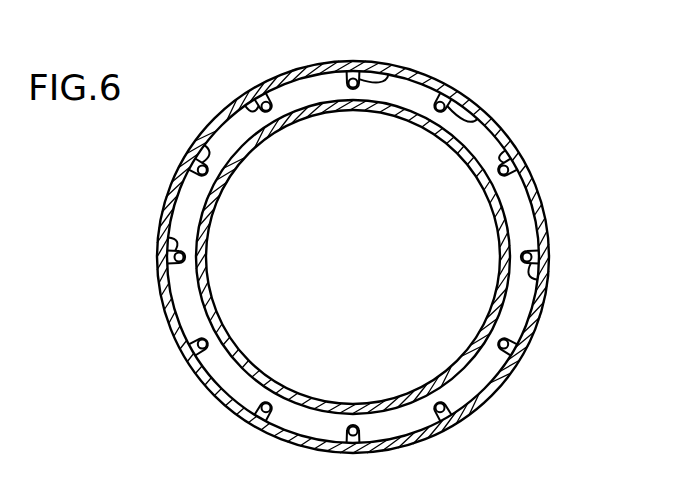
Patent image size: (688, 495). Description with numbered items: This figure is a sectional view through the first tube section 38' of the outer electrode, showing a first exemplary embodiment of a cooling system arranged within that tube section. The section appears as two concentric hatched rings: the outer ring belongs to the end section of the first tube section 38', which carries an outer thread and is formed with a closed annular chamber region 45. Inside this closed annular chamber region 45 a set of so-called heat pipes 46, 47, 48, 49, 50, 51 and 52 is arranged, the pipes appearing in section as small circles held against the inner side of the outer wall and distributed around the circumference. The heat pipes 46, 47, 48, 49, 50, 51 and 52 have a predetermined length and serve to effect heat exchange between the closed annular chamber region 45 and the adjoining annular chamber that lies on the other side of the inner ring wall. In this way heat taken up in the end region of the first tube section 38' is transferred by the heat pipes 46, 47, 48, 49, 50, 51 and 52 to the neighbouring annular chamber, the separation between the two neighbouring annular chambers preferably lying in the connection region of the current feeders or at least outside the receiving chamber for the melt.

The first tube section 38' is at (306, 257).
The closed annular chamber region 45 is at (523, 209).
The heat pipe 46 is at (540, 280).
The heat pipe 47 is at (510, 147).
The heat pipe 48 is at (480, 114).
The heat pipe 49 is at (396, 64).
The heat pipe 50 is at (244, 104).
The heat pipe 51 is at (197, 142).
The heat pipe 52 is at (167, 239).